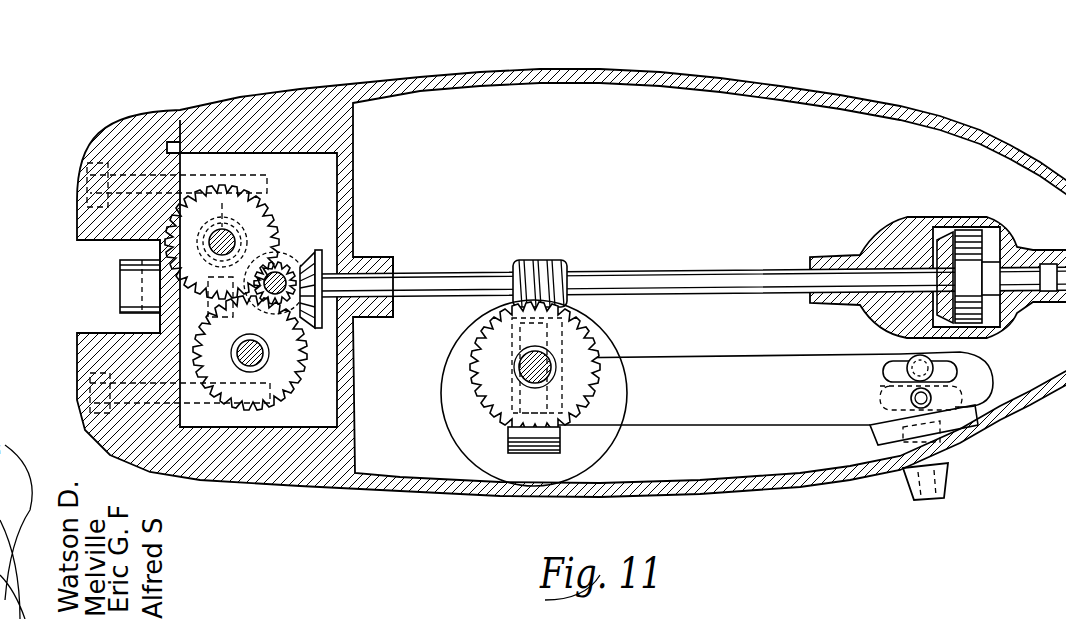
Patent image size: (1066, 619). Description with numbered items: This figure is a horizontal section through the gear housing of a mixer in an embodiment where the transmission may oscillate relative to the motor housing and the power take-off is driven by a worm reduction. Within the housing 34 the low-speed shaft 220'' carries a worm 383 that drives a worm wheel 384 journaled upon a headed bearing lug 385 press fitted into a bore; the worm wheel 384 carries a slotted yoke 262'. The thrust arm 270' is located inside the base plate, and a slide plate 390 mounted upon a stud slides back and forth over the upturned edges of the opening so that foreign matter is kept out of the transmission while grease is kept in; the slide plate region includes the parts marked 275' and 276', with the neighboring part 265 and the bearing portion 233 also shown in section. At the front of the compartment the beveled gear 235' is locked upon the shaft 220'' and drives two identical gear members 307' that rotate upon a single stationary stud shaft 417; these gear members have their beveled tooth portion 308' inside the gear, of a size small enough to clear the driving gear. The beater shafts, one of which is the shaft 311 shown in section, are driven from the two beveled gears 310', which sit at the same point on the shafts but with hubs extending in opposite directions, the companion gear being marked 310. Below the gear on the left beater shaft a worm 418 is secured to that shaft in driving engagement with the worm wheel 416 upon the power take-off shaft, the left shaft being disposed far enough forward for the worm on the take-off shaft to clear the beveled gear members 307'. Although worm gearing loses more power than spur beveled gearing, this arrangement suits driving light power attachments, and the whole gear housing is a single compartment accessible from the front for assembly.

The housing 34 is at (785, 72).
The worm 418 is at (243, 162).
The bearing cylinder 233 is at (132, 282).
The worm wheel 416 is at (160, 331).
The beveled gear 310' is at (251, 242).
The lower spur gear 310 is at (302, 353).
The gear shaft 311 is at (237, 228).
The stationary stud shaft 417 is at (286, 302).
The shaft 220'' is at (693, 267).
The beveled tooth portion 308' is at (313, 267).
The beveled gear 235' is at (365, 277).
The gear member 307' is at (373, 305).
The worm 383 is at (543, 261).
The slide plate 390 is at (603, 447).
The thrust arm 270' is at (775, 377).
The bracket 265 is at (497, 423).
The worm wheel 384 is at (587, 327).
The headed bearing lug 385 is at (546, 362).
The slotted yoke 262' is at (579, 479).
The slide plate 275' is at (885, 421).
The pin 276' is at (963, 381).